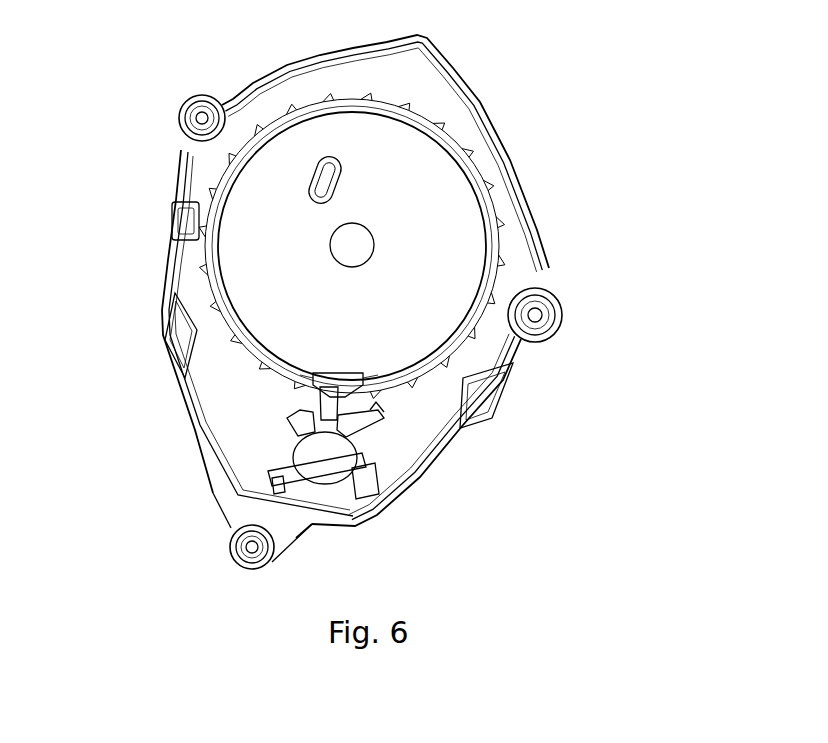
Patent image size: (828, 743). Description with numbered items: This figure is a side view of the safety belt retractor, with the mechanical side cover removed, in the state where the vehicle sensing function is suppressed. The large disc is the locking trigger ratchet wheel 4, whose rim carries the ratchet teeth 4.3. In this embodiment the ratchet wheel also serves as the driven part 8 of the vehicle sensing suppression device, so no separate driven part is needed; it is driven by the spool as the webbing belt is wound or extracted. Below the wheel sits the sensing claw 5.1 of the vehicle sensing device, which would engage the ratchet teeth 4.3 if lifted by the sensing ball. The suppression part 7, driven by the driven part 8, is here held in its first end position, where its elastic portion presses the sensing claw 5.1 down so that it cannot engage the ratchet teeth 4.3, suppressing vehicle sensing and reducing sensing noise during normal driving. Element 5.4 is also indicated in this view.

The locking trigger ratchet wheel 4 is at (385, 165).
The driven part 8 is at (400, 208).
The ratchet teeth 4.3 is at (502, 205).
The suppression part 7 is at (320, 378).
The sensing claw 5.1 is at (380, 416).
The spring 5.4 is at (342, 420).